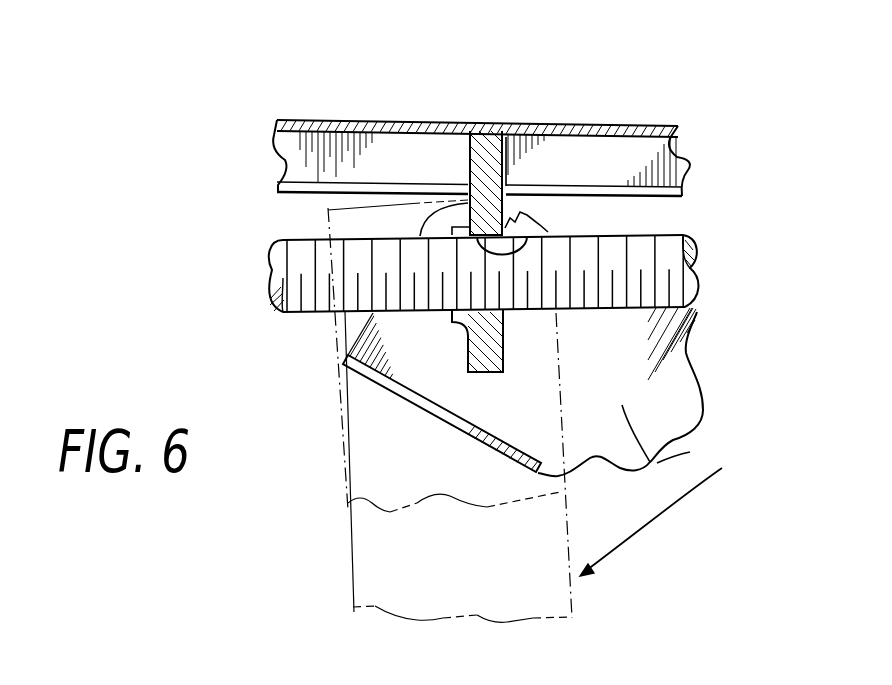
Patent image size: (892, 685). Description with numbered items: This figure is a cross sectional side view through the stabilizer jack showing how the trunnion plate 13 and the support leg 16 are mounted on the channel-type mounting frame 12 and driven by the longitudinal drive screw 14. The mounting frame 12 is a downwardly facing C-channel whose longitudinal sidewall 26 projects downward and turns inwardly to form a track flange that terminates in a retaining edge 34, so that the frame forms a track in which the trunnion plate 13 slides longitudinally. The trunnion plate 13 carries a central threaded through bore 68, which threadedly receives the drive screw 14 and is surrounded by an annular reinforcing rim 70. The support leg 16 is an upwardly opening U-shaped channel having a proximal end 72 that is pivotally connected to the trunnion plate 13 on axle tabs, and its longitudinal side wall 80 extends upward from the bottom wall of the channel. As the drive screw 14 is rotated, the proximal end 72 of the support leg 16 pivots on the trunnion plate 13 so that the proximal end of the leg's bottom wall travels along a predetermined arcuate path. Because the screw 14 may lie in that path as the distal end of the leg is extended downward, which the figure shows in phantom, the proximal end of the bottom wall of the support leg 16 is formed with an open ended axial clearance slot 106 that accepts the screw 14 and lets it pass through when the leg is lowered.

The channel-type mounting frame 12 is at (382, 122).
The trunnion plate 13 is at (469, 171).
The longitudinal sidewall 26 is at (690, 150).
The retaining edge 34 is at (684, 195).
The central threaded through bore 68 is at (522, 252).
The longitudinal drive screw 14 is at (320, 313).
The support leg 16 is at (697, 375).
The annular reinforcing rim 70 is at (460, 328).
The proximal end 72 is at (495, 459).
The longitudinal side wall 80 is at (654, 510).
The axial clearance slot 106 is at (396, 401).